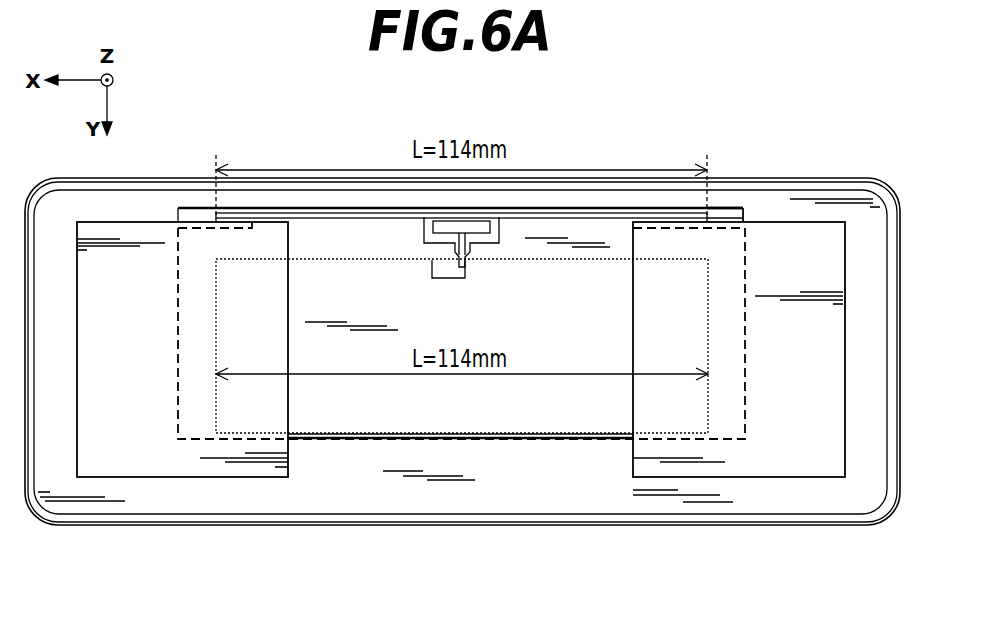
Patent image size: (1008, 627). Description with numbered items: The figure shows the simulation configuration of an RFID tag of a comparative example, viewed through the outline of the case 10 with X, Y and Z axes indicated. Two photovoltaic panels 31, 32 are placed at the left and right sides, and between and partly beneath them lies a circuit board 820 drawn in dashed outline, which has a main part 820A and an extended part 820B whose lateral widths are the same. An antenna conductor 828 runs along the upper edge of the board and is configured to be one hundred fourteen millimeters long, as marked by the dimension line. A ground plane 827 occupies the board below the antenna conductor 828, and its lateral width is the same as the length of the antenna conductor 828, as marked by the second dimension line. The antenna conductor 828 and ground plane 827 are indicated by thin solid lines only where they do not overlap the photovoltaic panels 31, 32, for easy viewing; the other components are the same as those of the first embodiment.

The case 10 is at (862, 492).
The photovoltaic panel 31 is at (142, 438).
The photovoltaic panel 32 is at (758, 465).
The circuit board 820 is at (608, 465).
The main part 820A is at (545, 440).
The extended part 820B is at (728, 215).
The ground plane 827 is at (385, 418).
The antenna conductor 828 is at (203, 212).